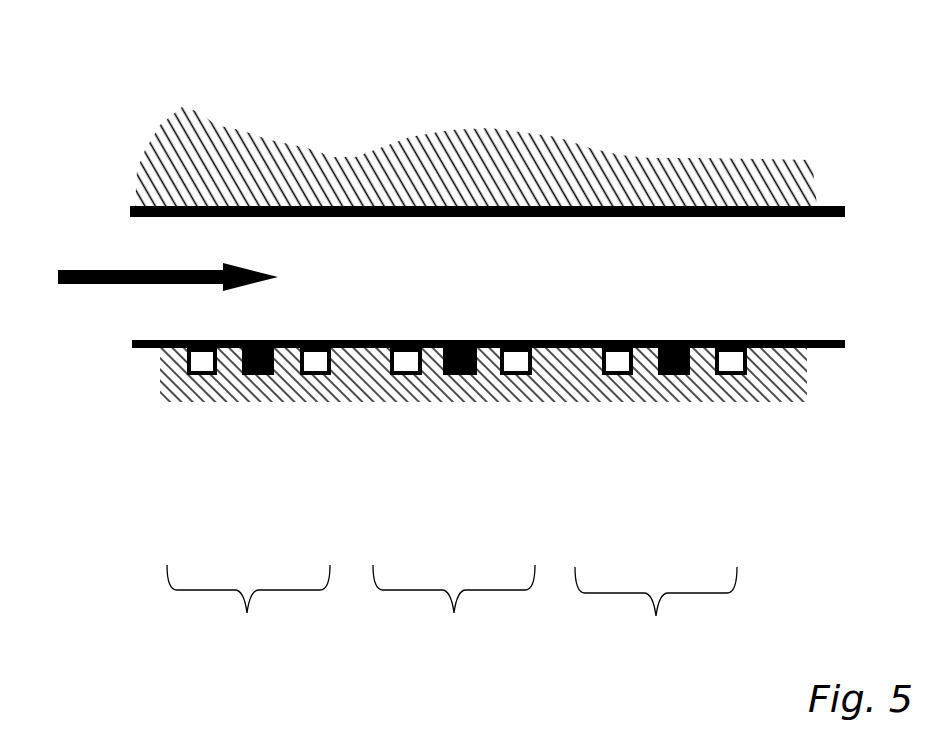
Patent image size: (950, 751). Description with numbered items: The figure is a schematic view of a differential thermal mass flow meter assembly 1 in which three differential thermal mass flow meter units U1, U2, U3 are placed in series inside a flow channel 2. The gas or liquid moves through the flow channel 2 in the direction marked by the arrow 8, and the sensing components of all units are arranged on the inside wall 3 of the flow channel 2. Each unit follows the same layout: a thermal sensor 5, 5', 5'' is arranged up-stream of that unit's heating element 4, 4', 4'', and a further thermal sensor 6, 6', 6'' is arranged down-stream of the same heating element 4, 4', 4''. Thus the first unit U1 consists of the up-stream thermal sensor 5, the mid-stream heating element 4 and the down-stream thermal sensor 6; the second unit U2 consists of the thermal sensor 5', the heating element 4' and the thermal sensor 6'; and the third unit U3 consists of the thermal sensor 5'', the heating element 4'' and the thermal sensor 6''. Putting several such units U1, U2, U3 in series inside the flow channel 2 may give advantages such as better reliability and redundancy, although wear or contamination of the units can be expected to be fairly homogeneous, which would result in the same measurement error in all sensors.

The differential thermal mass flow meter assembly 1 is at (651, 96).
The flow channel 2 is at (508, 297).
The inside wall 3 is at (770, 340).
The heating element 4 is at (253, 434).
The up-stream arranged thermal sensor 5 is at (192, 436).
The down-stream arranged thermal sensor 6 is at (309, 436).
The heating element 4' is at (458, 434).
The up-stream thermal sensor 5' is at (398, 436).
The down-stream thermal sensor 6' is at (513, 436).
The heating element 4'' is at (666, 435).
The up-stream thermal sensor 5'' is at (605, 437).
The down-stream thermal sensor 6'' is at (724, 437).
The arrow 8 is at (95, 270).
The differential thermal mass flow meter unit U1 is at (248, 605).
The differential thermal mass flow meter unit U2 is at (454, 605).
The differential thermal mass flow meter unit U3 is at (656, 608).